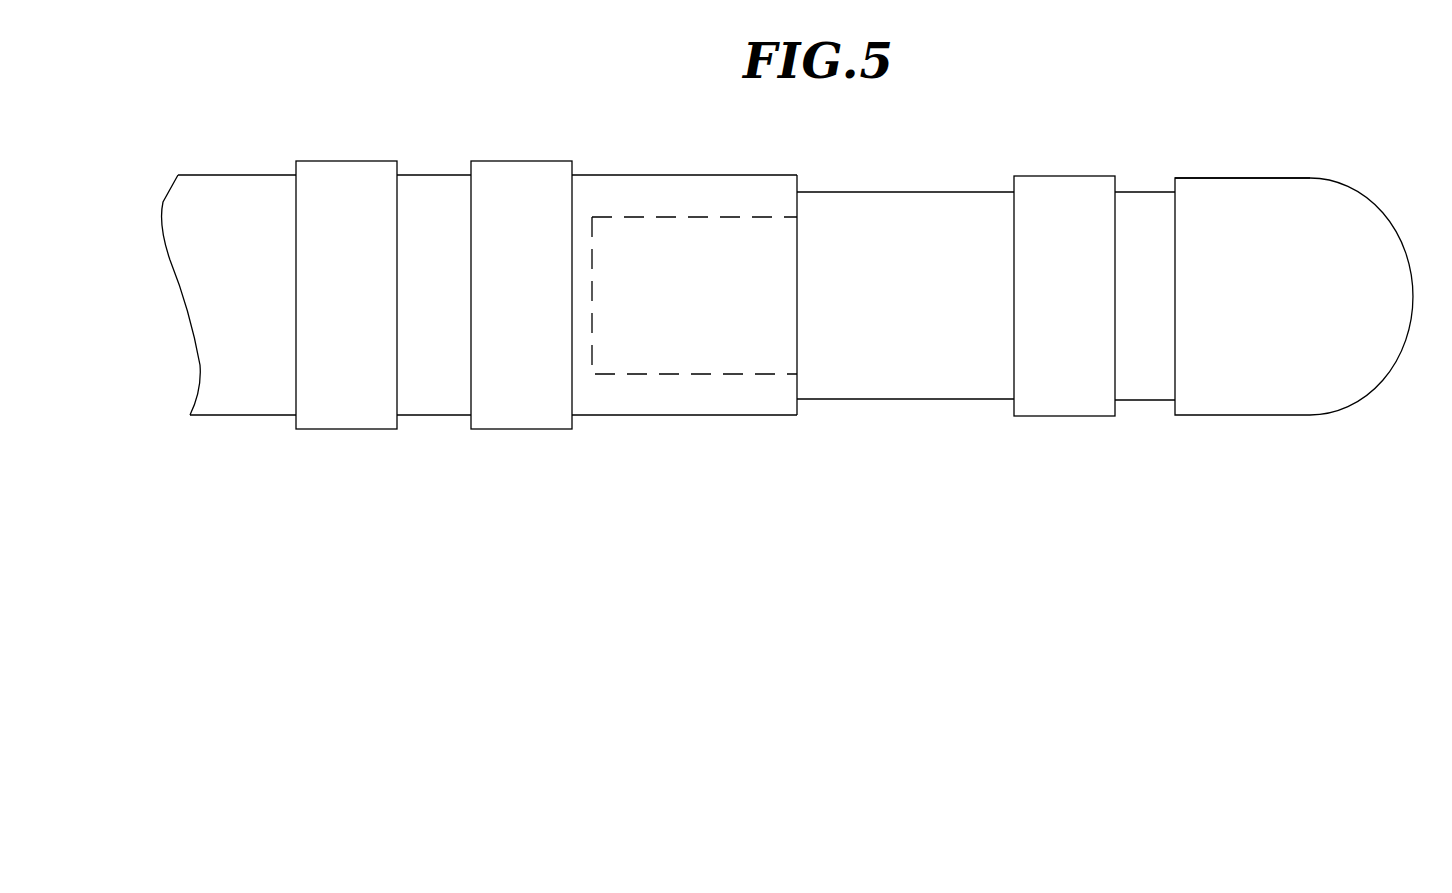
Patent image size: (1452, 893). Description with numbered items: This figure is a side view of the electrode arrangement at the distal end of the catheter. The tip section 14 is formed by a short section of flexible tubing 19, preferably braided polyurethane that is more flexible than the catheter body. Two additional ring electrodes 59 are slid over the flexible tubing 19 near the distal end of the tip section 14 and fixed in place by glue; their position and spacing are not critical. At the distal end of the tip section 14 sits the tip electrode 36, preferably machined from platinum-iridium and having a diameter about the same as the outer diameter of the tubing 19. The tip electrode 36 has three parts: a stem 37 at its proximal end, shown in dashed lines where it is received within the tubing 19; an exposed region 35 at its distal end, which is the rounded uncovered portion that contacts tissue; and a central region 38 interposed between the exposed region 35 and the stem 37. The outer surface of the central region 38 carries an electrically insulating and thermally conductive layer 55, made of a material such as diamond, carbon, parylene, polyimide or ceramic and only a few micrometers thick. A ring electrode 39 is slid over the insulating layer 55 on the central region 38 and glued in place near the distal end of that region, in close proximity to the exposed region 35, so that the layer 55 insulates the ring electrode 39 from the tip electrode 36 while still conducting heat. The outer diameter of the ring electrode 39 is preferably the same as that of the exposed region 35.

The tip section 14 is at (348, 113).
The tubing 19 is at (233, 387).
The additional ring electrodes 59 is at (352, 403).
The stem 37 is at (708, 375).
The central region 38 is at (899, 375).
The ring electrode 39 is at (1059, 405).
The electrically insulating and thermally conductive layer 55 is at (1147, 401).
The exposed region 35 is at (1332, 375).
The tip electrode 36 is at (1237, 176).